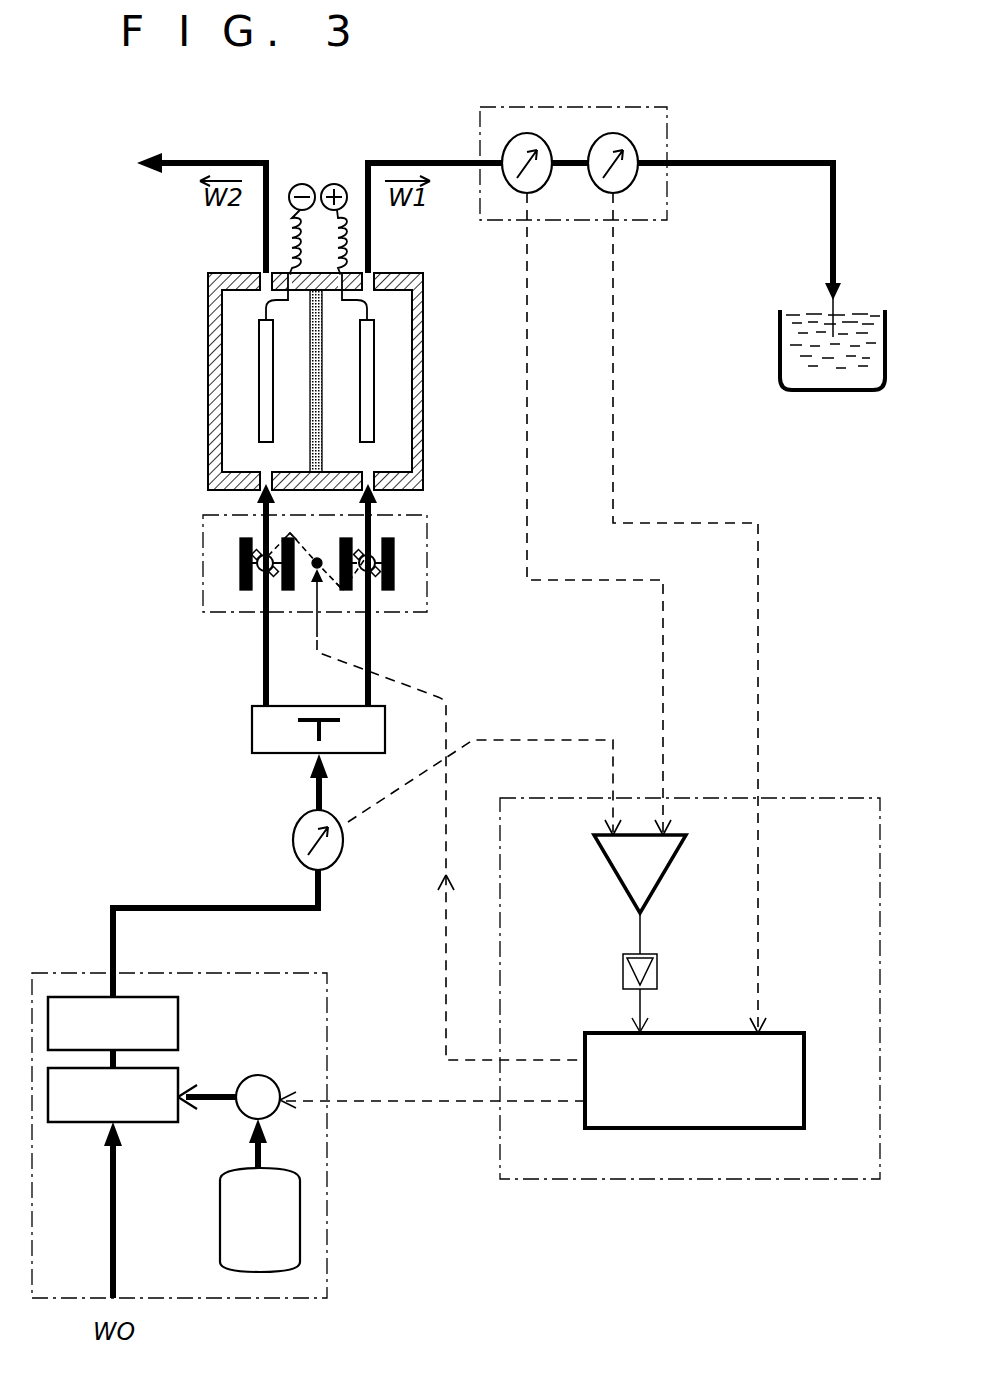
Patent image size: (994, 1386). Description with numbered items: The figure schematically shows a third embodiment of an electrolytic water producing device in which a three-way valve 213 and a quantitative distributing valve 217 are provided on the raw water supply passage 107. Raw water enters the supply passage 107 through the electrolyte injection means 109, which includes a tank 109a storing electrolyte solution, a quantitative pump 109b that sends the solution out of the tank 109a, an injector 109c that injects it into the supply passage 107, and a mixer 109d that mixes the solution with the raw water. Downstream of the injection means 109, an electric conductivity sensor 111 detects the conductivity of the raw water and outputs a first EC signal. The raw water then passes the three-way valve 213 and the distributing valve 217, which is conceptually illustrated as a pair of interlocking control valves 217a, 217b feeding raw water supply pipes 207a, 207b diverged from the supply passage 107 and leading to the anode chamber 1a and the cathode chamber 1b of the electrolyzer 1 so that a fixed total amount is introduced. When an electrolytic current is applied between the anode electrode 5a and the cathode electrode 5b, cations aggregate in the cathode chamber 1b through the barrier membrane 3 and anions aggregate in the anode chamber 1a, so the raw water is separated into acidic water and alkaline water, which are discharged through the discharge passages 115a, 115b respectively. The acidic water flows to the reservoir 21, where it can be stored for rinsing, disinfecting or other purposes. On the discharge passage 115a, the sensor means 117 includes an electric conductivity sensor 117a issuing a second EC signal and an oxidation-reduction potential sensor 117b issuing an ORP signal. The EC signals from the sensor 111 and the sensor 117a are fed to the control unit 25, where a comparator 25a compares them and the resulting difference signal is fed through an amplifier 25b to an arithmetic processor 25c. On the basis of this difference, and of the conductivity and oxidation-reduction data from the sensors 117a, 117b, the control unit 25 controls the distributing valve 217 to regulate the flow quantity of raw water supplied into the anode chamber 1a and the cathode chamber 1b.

The electrolyzer 1 is at (306, 337).
The anode chamber 1a is at (397, 347).
The cathode chamber 1b is at (233, 312).
The barrier membrane 3 is at (312, 452).
The anode electrode 5a is at (370, 412).
The cathode electrode 5b is at (264, 390).
The reservoir 21 is at (830, 380).
The control unit 25 is at (690, 951).
The comparator 25a is at (612, 858).
The amplifier 25b is at (623, 978).
The arithmetic processor 25c is at (598, 1050).
The raw water supply passage 107 is at (160, 906).
The electrolyte injection means 109 is at (233, 1135).
The tank 109a is at (228, 1245).
The quantitative pump 109b is at (247, 1078).
The injector 109c is at (146, 1116).
The mixer 109d is at (168, 1018).
The electric conductivity sensor 111 is at (298, 848).
The discharge passage 115a is at (740, 172).
The discharge passage 115b is at (218, 160).
The sensor means 117 is at (575, 134).
The electric conductivity sensor 117a is at (515, 150).
The oxidation-reduction potential sensor 117b is at (632, 160).
The raw water supply pipe 207a is at (368, 650).
The raw water supply pipe 207b is at (266, 658).
The three-way valve 213 is at (252, 740).
The quantitative distributing valve 217 is at (301, 583).
The control valve 217a is at (394, 563).
The control valve 217b is at (240, 585).